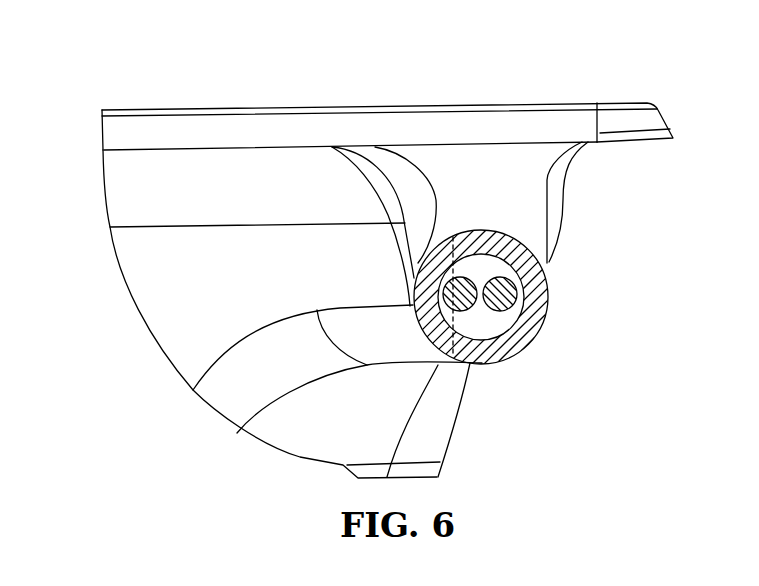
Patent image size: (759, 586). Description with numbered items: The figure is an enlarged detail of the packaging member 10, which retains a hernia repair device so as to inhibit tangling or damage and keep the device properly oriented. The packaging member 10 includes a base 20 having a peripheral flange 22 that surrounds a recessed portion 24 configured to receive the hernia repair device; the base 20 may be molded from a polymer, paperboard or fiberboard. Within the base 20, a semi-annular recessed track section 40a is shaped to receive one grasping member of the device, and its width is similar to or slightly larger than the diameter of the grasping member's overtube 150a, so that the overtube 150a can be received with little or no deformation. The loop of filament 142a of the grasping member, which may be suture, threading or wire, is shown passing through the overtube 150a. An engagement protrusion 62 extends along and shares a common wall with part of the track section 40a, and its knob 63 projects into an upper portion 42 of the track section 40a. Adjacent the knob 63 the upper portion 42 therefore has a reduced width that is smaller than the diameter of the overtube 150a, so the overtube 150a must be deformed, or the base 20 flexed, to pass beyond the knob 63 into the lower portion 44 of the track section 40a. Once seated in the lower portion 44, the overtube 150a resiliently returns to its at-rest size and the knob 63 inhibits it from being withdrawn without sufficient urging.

The packaging member 10 is at (548, 61).
The base 20 is at (577, 91).
The peripheral flange 22 is at (643, 100).
The recessed portion 24 is at (452, 436).
The first semi-annular recessed track section 40a is at (502, 173).
The upper portion of track section 42 is at (532, 187).
The lower portion of track section 44 is at (543, 265).
The engagement protrusion 62 is at (334, 177).
The knob 63 is at (413, 160).
The loop of filament 142a is at (462, 315).
The overtube 150a is at (533, 252).